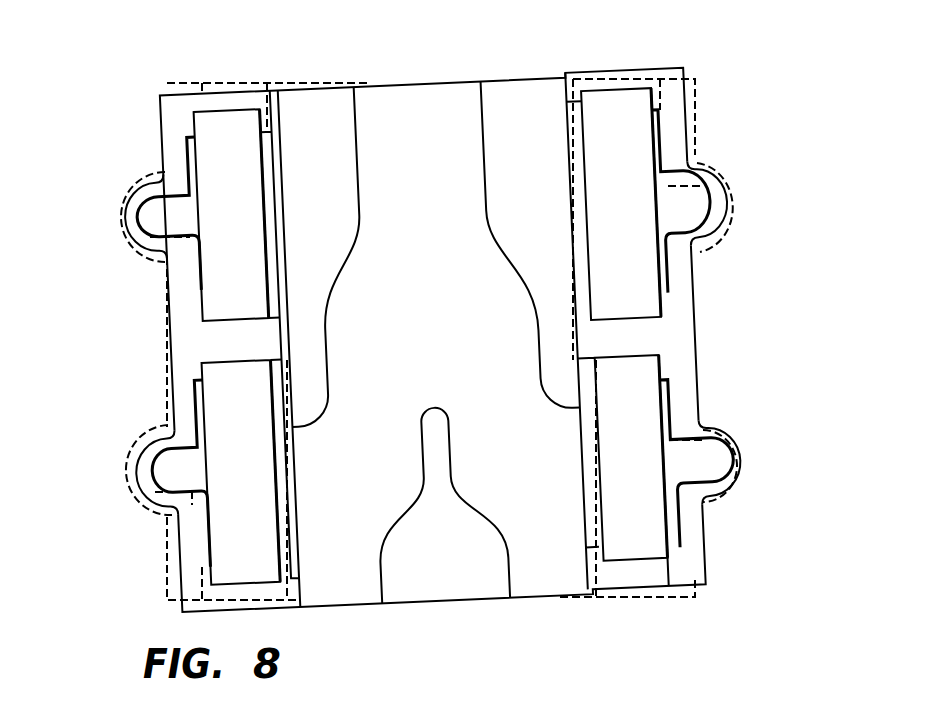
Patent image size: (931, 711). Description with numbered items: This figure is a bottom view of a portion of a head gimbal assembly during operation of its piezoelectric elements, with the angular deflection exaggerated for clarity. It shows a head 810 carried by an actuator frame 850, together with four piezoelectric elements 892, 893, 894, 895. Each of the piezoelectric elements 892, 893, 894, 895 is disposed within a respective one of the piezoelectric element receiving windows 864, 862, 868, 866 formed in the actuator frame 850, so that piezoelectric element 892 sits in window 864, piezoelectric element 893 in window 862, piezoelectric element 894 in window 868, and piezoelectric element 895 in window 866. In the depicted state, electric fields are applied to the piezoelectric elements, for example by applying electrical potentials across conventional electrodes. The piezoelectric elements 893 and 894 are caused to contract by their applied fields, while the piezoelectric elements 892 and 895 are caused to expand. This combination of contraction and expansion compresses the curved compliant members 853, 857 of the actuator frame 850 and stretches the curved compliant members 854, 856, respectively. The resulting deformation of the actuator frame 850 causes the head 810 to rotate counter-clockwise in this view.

The head 810 is at (425, 98).
The actuator frame 850 is at (650, 63).
The curved compliant member 853 is at (133, 210).
The curved compliant member 854 is at (153, 497).
The curved compliant member 856 is at (732, 212).
The curved compliant member 857 is at (733, 457).
The piezoelectric element receiving window 862 is at (173, 212).
The piezoelectric element receiving window 864 is at (180, 474).
The piezoelectric element receiving window 866 is at (683, 207).
The piezoelectric element receiving window 868 is at (692, 463).
The piezoelectric element 892 is at (232, 402).
The piezoelectric element 893 is at (235, 283).
The piezoelectric element 894 is at (645, 520).
The piezoelectric element 895 is at (633, 278).